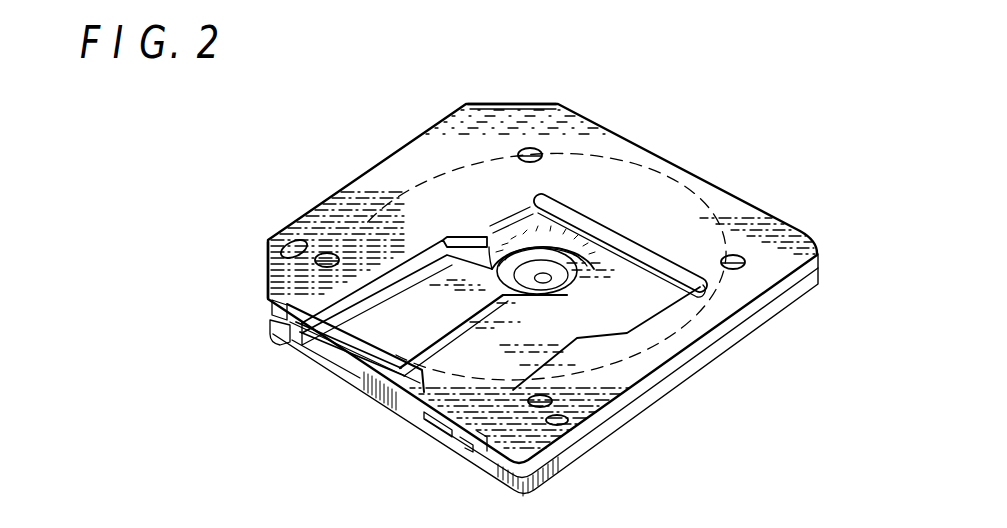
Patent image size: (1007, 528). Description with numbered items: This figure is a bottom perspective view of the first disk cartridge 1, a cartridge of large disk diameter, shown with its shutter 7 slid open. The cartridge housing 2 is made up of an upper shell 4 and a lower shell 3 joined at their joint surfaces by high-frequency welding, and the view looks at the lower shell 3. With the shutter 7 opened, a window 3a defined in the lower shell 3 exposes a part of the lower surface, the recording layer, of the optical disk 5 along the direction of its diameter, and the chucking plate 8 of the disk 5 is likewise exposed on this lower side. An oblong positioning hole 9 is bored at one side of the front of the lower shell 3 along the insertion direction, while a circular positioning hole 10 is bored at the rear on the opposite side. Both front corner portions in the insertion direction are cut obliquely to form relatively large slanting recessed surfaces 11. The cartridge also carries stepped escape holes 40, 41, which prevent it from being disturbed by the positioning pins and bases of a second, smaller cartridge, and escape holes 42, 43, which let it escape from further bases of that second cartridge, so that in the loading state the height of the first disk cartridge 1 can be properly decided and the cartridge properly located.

The first disk cartridge 1 is at (692, 160).
The cartridge housing 2 is at (812, 331).
The lower shell 3 is at (760, 318).
The window 3a is at (411, 252).
The upper shell 4 is at (770, 293).
The disk 5 is at (721, 198).
The shutter 7 is at (602, 318).
The chucking plate 8 is at (535, 265).
The positioning hole 9 is at (291, 242).
The positioning hole 10 is at (557, 425).
The slanting recessed surface 11 is at (521, 103).
The stepped escape hole 40 is at (326, 252).
The stepped escape hole 41 is at (529, 407).
The escape hole 42 is at (533, 148).
The escape hole 43 is at (745, 257).